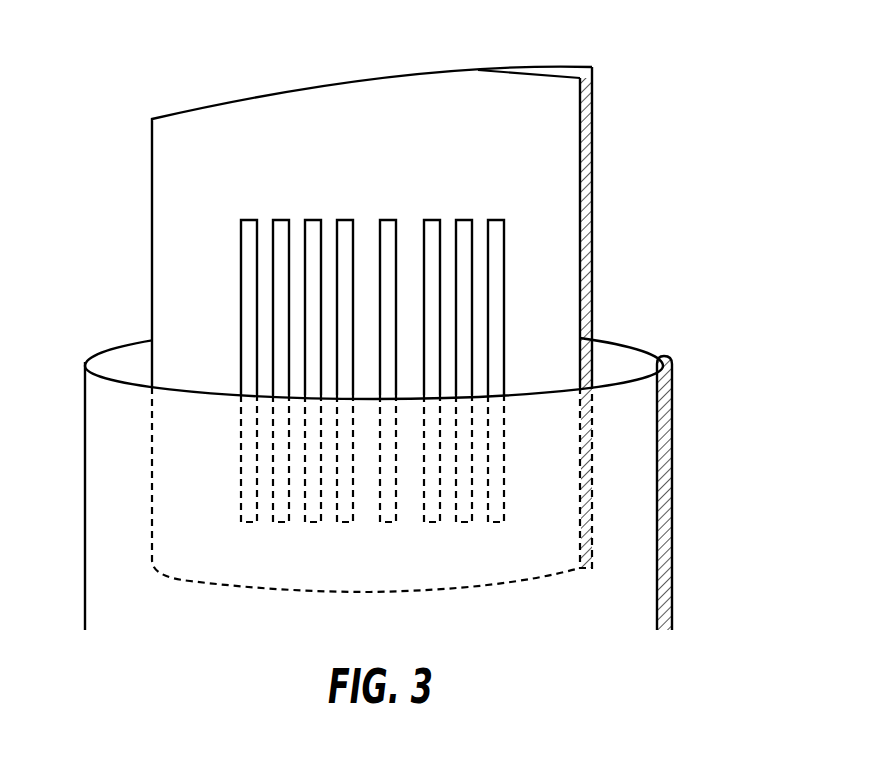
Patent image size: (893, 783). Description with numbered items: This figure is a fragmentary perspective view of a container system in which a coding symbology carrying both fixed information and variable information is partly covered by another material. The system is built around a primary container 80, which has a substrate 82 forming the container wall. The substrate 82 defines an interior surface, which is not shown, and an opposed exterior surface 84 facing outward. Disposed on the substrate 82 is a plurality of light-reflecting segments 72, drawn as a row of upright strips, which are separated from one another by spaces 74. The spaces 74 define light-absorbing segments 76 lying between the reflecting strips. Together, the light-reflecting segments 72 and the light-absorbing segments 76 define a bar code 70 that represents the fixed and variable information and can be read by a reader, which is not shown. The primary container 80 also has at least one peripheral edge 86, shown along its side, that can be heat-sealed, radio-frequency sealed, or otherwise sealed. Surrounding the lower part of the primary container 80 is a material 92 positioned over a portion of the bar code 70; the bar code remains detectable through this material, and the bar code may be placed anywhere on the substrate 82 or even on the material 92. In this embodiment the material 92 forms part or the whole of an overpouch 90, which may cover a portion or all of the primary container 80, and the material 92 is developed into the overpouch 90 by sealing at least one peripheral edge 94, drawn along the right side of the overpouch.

The bar code 70 is at (502, 155).
The light-reflecting segments 72 is at (431, 220).
The spaces 74 is at (478, 522).
The light-absorbing segments 76 is at (297, 220).
The primary container 80 is at (616, 148).
The substrate 82 is at (553, 72).
The exterior surface 84 is at (467, 87).
The peripheral edge 86 is at (592, 243).
The overpouch 90 is at (692, 442).
The material 92 is at (178, 461).
The peripheral edge 94 is at (672, 506).